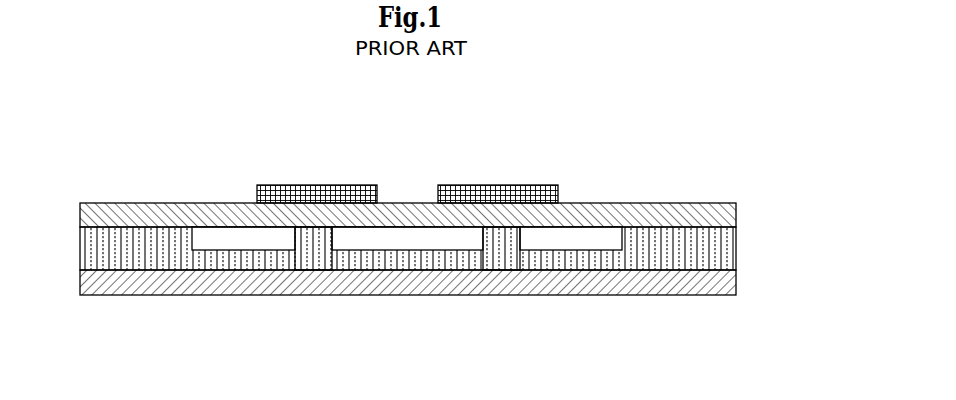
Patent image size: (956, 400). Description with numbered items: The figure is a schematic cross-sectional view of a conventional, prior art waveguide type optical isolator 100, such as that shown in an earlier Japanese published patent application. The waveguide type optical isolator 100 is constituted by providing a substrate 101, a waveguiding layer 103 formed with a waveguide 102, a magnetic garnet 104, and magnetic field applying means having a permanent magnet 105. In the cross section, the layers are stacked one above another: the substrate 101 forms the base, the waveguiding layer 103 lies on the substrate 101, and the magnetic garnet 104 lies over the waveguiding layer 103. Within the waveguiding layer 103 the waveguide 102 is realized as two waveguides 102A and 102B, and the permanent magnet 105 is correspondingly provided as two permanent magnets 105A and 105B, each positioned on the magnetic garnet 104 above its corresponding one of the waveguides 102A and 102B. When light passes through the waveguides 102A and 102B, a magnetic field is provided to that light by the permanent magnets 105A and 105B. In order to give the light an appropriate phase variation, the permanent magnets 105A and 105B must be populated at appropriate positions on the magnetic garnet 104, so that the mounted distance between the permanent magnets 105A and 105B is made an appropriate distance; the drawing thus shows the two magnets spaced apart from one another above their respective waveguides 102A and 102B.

The waveguide type optical isolator 100 is at (456, 224).
The substrate 101 is at (703, 284).
The waveguide 102 is at (401, 303).
The waveguide 102A is at (317, 243).
The waveguide 102B is at (492, 286).
The waveguiding layer 103 is at (697, 252).
The magnetic garnet 104 is at (705, 213).
The permanent magnet 105 is at (407, 135).
The permanent magnet 105A is at (337, 185).
The permanent magnet 105B is at (498, 158).